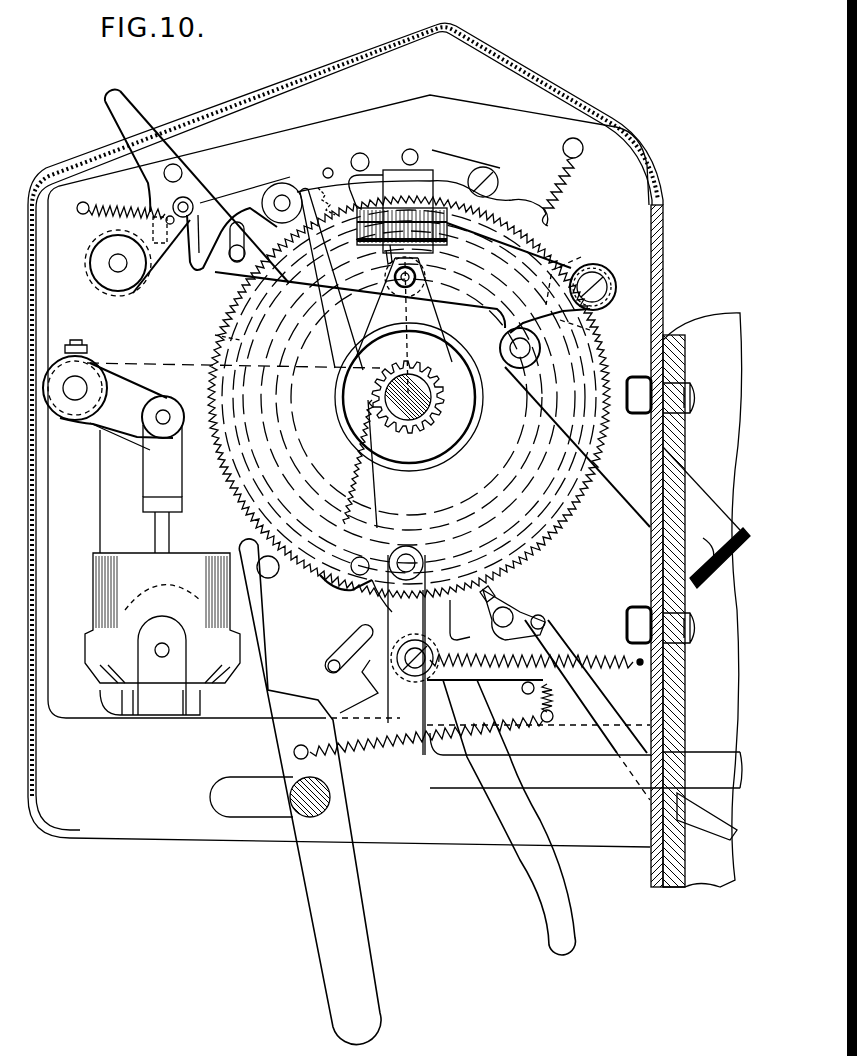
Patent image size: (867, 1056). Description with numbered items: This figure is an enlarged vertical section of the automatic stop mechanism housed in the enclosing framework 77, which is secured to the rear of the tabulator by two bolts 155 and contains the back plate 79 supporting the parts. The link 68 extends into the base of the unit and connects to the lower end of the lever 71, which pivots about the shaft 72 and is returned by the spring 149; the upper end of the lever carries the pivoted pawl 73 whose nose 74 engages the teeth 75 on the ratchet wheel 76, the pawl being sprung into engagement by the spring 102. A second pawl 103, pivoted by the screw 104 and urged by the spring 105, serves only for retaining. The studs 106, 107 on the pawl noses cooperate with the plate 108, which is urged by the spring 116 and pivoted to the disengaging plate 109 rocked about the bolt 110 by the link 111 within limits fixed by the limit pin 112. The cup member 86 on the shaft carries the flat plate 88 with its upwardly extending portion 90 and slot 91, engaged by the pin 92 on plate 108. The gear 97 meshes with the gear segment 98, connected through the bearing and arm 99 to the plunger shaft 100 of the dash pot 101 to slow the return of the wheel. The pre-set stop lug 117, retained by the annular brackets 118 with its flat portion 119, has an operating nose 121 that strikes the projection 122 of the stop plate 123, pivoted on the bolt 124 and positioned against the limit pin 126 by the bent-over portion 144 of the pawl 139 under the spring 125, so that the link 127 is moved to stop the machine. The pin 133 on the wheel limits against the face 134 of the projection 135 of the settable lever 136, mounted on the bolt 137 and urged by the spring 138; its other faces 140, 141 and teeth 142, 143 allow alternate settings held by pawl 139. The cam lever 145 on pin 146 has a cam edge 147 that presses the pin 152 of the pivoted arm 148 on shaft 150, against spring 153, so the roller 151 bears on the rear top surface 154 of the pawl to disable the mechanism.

The link 68 is at (578, 783).
The lever 71 is at (432, 508).
The shaft 72 is at (440, 404).
The pawl 73 is at (310, 178).
The nose 74 is at (402, 157).
The teeth 75 is at (212, 315).
The ratchet wheel 76 is at (596, 333).
The enclosing framework 77 is at (665, 258).
The back plate 79 is at (228, 708).
The cup member 86 is at (462, 376).
The flat plate 88 is at (357, 344).
The upwardly extending portion 90 is at (415, 284).
The slot 91 is at (392, 285).
The pin 92 is at (416, 274).
The gear 97 is at (432, 399).
The gear segment 98 is at (156, 362).
The bearing and arm 99 is at (104, 412).
The plunger shaft 100 is at (158, 540).
The dash pot 101 is at (98, 605).
The spring 102 is at (333, 167).
The second pawl 103 is at (445, 160).
The screw 104 is at (500, 168).
The spring 105 is at (562, 180).
The stud 106 is at (362, 153).
The stud 107 is at (440, 160).
The plate 108 is at (483, 166).
The disengaging plate 109 is at (548, 262).
The bolt 110 is at (604, 280).
The link 111 is at (603, 407).
The limit pin 112 is at (237, 275).
The spring 116 is at (388, 257).
The pre-set stop lug 117 is at (577, 268).
The annular brackets 118 is at (215, 337).
The flat portion 119 is at (500, 300).
The operating nose 121 is at (592, 325).
The projection 122 is at (512, 540).
The stop plate 123 is at (480, 630).
The bolt 124 is at (428, 674).
The spring 125 is at (556, 720).
The limit pin 126 is at (523, 692).
The link 127 is at (590, 705).
The pin 133 is at (338, 584).
The face 134 is at (352, 590).
The projection 135 is at (406, 545).
The settable lever 136 is at (312, 890).
The bolt 137 is at (264, 577).
The spring 138 is at (360, 750).
The pawl 139 is at (545, 618).
The face 140 is at (390, 555).
The face 141 is at (390, 522).
The tooth 142 is at (368, 680).
The tooth 143 is at (388, 630).
The bent-over portion 144 is at (496, 600).
The cam lever 145 is at (147, 125).
The pin 146 is at (178, 166).
The cam edge 147 is at (205, 200).
The pivoted arm 148 is at (150, 230).
The spring 149 is at (594, 655).
The shaft 150 is at (110, 280).
The roller 151 is at (188, 198).
The pin 152 is at (168, 215).
The spring 153 is at (118, 208).
The rear top surface 154 is at (188, 250).
The bolts 155 is at (692, 415).